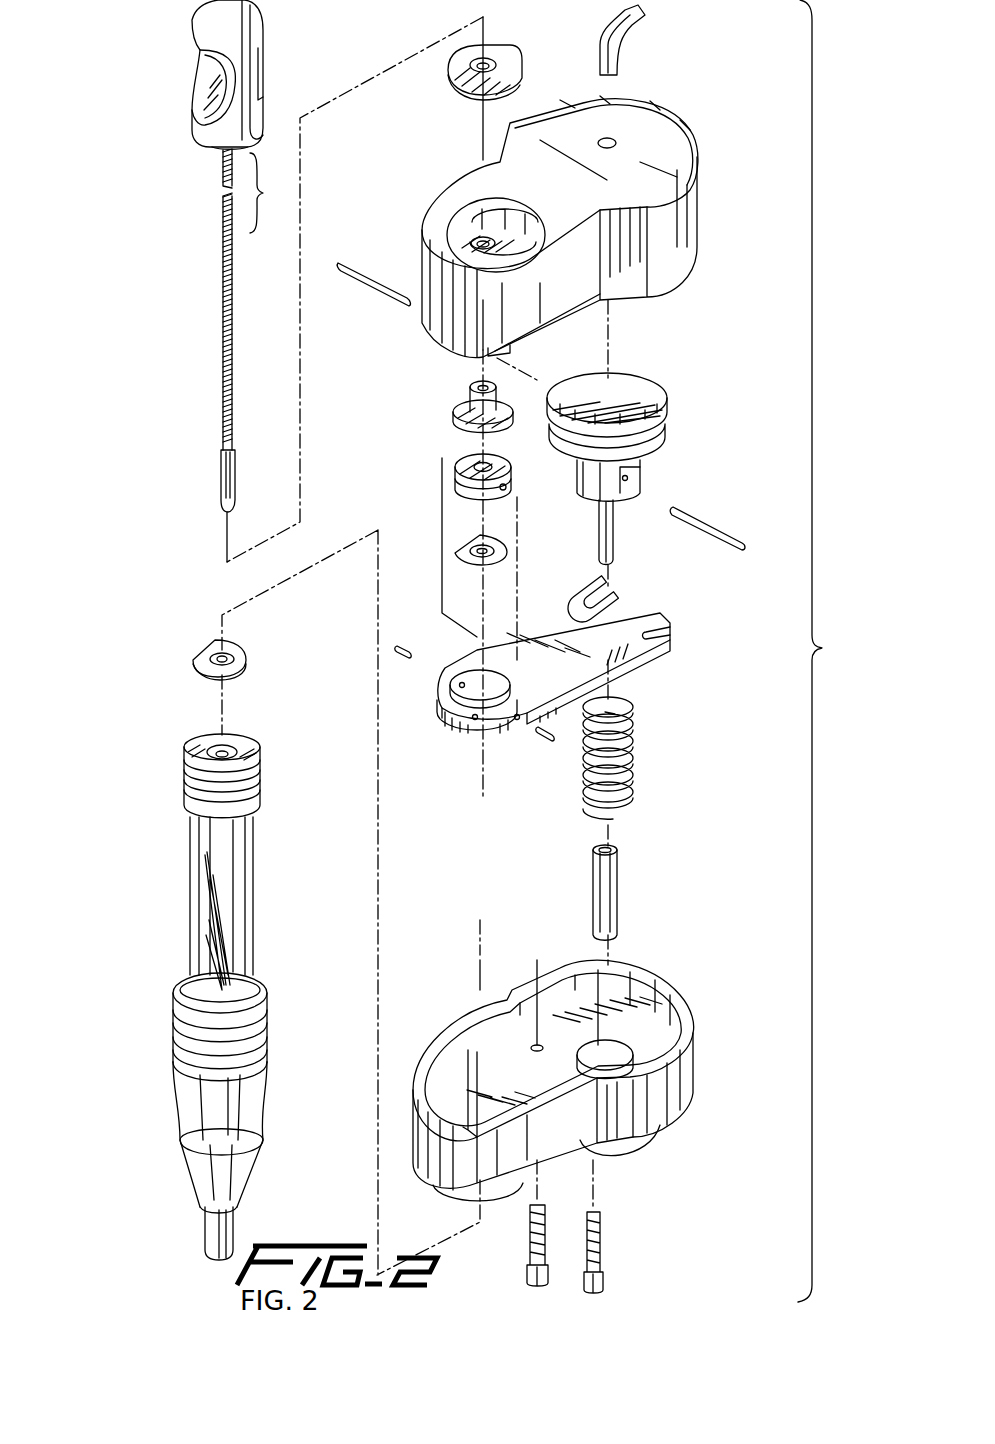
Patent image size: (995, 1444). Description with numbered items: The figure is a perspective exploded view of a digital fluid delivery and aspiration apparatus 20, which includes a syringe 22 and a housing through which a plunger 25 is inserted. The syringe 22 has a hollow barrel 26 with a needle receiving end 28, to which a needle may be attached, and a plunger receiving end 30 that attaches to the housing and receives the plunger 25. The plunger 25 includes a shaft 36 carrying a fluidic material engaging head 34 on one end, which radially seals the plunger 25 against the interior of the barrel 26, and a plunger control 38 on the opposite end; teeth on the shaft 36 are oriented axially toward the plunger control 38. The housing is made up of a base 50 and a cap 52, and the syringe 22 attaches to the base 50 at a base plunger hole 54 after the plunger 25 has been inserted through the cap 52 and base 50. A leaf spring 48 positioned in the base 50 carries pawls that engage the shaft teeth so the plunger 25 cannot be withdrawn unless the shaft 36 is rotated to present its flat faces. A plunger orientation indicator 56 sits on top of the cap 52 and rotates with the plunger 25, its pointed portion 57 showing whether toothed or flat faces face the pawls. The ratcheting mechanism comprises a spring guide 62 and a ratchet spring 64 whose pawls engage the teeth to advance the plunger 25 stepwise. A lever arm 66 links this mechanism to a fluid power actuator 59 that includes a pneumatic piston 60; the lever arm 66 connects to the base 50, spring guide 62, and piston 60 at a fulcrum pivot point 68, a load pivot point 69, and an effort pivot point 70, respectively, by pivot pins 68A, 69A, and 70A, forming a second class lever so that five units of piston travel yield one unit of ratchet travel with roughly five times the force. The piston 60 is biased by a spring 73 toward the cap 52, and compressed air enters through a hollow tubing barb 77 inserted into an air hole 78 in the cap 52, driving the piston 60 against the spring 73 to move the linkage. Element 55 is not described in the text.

The digital fluid delivery and aspiration apparatus 20 is at (832, 651).
The syringe 22 is at (224, 1015).
The plunger 25 is at (208, 186).
The barrel 26 is at (242, 912).
The needle receiving end 28 is at (215, 1233).
The plunger receiving end 30 is at (247, 743).
The fluidic material engaging head 34 is at (222, 504).
The shaft 36 is at (222, 308).
The plunger control 38 is at (200, 30).
The leaf spring 48 is at (208, 660).
The base 50 is at (595, 1080).
The cap 52 is at (585, 278).
The base plunger hole 54 is at (467, 1050).
The boss opening 55 is at (476, 240).
The plunger orientation indicator 56 is at (466, 47).
The pointed portion 57 is at (523, 55).
The fluid power actuator 59 is at (637, 375).
The pneumatic piston 60 is at (660, 400).
The spring guide 62 is at (462, 466).
The ratchet spring 64 is at (462, 552).
The lever arm 66 is at (625, 655).
The pivot point (fulcrum) 68 is at (410, 305).
The pivot pin 68A is at (358, 275).
The pivot point (load) 69 is at (517, 724).
The pivot pin 69A is at (404, 645).
The pivot point (effort) 70 is at (626, 478).
The pivot pin 70A is at (700, 522).
The spring 73 is at (640, 768).
The hollow tubing barb 77 is at (622, 53).
The air hole 78 is at (616, 143).